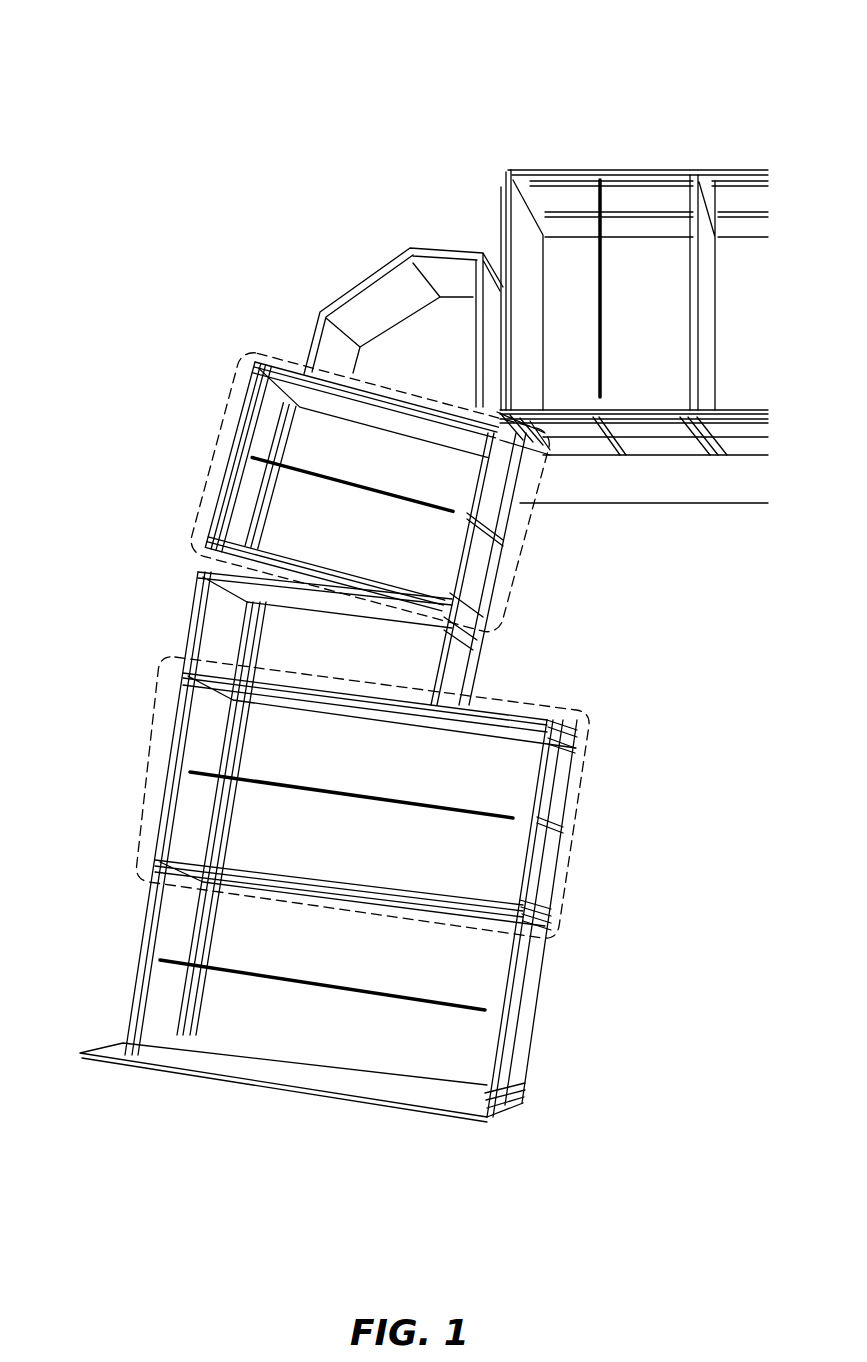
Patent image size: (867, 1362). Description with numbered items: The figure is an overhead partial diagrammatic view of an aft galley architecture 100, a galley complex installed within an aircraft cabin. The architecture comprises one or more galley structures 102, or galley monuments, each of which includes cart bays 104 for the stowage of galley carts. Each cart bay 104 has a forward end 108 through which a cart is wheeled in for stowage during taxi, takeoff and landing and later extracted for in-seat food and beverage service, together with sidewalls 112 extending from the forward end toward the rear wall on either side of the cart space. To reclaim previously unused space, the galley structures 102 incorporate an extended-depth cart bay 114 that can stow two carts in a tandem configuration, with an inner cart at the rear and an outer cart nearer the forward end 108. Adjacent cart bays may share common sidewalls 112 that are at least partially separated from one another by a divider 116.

The aft galley architecture 100 is at (104, 86).
The galley structure 102 is at (560, 172).
The cart bay 104 is at (213, 450).
The forward end 108 is at (488, 562).
The sidewall 112 is at (495, 727).
The extended-depth cart bay 114 is at (580, 828).
The divider 116 is at (480, 808).